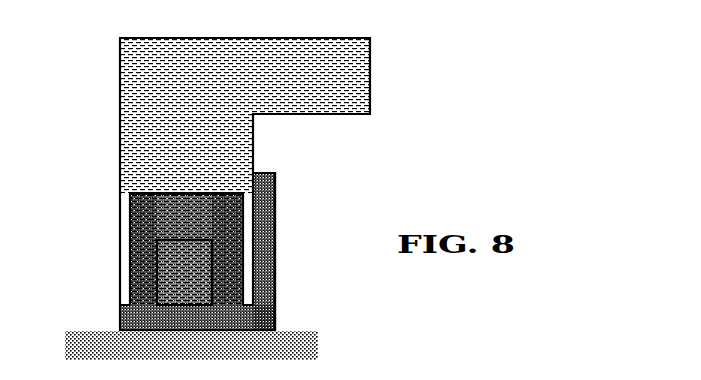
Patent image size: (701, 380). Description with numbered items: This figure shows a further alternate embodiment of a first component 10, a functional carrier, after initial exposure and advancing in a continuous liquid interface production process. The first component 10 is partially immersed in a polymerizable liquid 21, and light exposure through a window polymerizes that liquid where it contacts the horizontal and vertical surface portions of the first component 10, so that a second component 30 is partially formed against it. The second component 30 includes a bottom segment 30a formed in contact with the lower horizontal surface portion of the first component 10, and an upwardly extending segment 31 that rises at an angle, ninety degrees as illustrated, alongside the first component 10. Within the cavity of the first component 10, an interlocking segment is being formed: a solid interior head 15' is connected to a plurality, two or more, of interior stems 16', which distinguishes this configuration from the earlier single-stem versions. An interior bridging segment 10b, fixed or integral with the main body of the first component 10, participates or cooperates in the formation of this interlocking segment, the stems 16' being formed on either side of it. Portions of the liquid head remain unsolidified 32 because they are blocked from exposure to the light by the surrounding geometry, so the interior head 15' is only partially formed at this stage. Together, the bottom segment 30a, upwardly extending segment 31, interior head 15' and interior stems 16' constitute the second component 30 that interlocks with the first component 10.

The first component 10 is at (245, 184).
The interior bridging segment 10b is at (192, 267).
The interior head 15' is at (184, 216).
The interior stems 16' is at (196, 239).
The polymerizable liquid 21 is at (191, 345).
The second component 30 is at (278, 213).
The bottom segment 30a is at (207, 317).
The upwardly extending segment 31 is at (267, 195).
The unsolidified liquid 32 is at (188, 203).